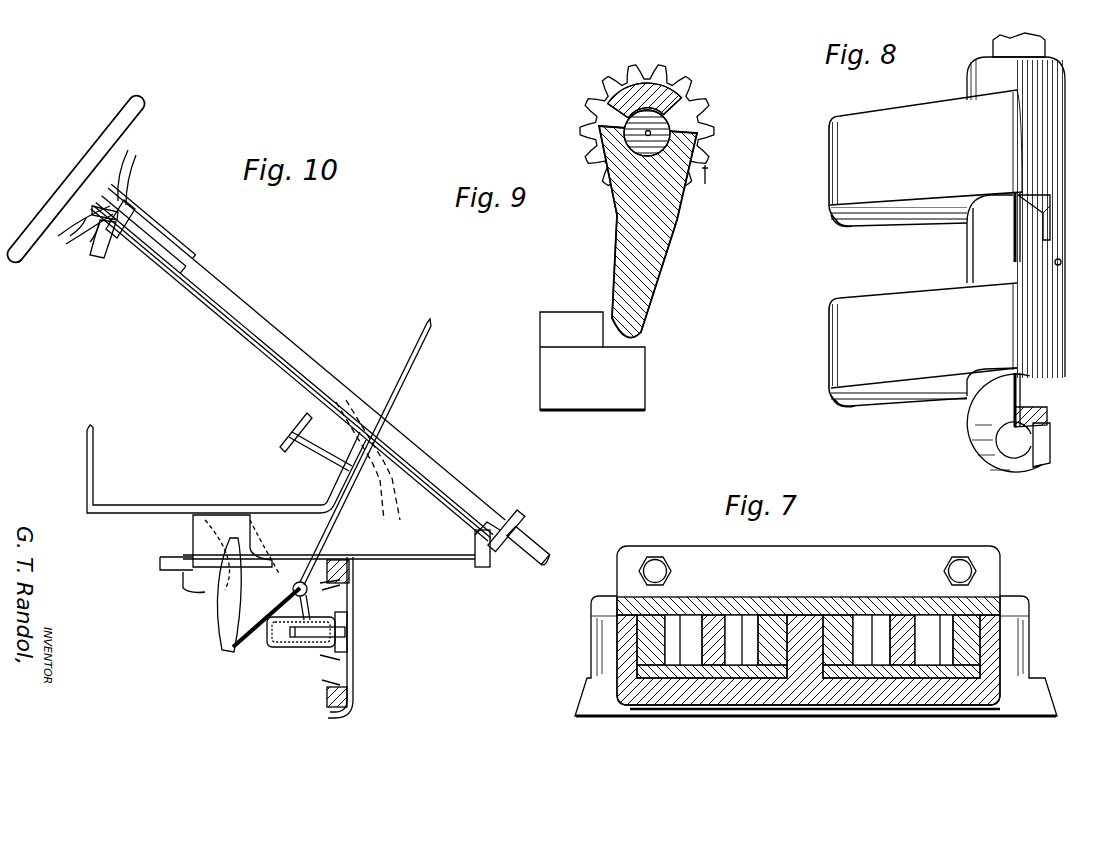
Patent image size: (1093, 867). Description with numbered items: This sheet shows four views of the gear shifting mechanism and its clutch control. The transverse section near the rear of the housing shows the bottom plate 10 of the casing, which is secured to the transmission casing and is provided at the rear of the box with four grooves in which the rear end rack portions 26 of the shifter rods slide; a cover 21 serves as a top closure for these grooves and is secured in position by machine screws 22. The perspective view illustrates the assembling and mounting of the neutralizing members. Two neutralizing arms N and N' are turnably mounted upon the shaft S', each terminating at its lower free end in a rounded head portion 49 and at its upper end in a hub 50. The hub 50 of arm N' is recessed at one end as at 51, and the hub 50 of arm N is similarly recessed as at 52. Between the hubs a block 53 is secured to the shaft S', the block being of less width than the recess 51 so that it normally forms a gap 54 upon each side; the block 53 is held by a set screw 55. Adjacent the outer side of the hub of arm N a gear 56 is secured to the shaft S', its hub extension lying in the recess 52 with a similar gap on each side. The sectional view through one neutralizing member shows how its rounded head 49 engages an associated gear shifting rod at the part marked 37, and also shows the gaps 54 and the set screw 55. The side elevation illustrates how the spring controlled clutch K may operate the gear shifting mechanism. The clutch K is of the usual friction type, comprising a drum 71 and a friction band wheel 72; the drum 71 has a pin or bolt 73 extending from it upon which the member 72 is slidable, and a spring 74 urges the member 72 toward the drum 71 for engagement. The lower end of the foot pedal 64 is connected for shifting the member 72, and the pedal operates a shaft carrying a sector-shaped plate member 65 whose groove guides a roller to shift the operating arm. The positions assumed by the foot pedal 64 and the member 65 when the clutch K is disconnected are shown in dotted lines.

In FIG. 7, the bottom plate 10 is at (812, 702).
In FIG. 7, the cover 21 is at (815, 600).
In FIG. 7, the machine screws 22 is at (670, 573).
In FIG. 7, the rear end rack portion 26 is at (767, 660).
In FIG. 9, the stop block 37 is at (565, 322).
In FIG. 9, the rounded head portion 49 is at (630, 337).
In FIG. 8, the rounded head portion 49 is at (838, 225).
In FIG. 8, the hub 50 is at (1067, 100).
In FIG. 8, the recess 51 is at (1030, 205).
In FIG. 8, the recess 52 is at (1040, 462).
In FIG. 8, the block 53 is at (1040, 262).
In FIG. 9, the gap 54 is at (597, 113).
In FIG. 9, the set screw 55 is at (657, 80).
In FIG. 9, the gear 56 is at (712, 184).
In FIG. 10, the foot pedal 64 is at (358, 515).
In FIG. 10, the plate member 65 is at (240, 650).
In FIG. 10, the drum 71 is at (348, 703).
In FIG. 10, the friction band wheel 72 is at (335, 700).
In FIG. 10, the pin or bolt 73 is at (275, 645).
In FIG. 10, the spring 74 is at (305, 640).
In FIG. 10, the clutch K is at (355, 657).
In FIG. 8, the neutralizing arm N is at (870, 350).
In FIG. 8, the neutralizing arm N' is at (896, 158).
In FIG. 9, the shaft S' is at (678, 106).
In FIG. 8, the shaft S' is at (966, 318).